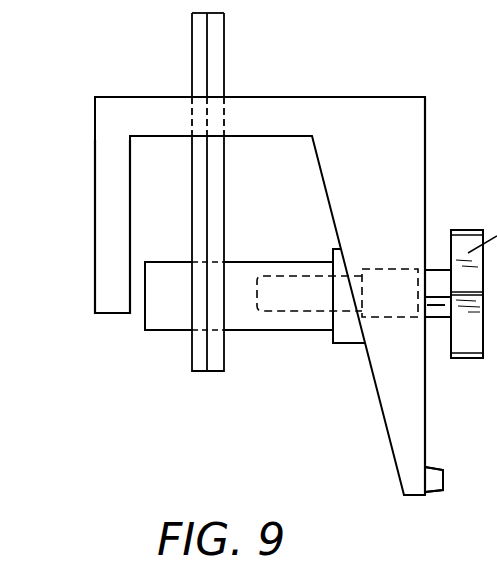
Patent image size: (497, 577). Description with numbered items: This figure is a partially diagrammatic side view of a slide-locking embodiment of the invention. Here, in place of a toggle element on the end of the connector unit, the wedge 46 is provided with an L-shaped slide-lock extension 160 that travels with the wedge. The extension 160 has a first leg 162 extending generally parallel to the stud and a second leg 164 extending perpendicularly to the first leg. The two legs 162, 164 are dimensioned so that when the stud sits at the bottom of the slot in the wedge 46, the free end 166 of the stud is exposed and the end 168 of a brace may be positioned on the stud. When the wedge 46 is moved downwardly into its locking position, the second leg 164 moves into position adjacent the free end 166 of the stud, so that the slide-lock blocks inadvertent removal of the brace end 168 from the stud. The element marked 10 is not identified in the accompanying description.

The L-shaped slide-lock extension 160 is at (257, 76).
The first leg 162 is at (320, 112).
The second leg 164 is at (110, 175).
The free end of the stud 166 is at (187, 318).
The end of a brace 168 is at (212, 223).
The wedge 46 is at (402, 167).
The base 10 is at (433, 480).